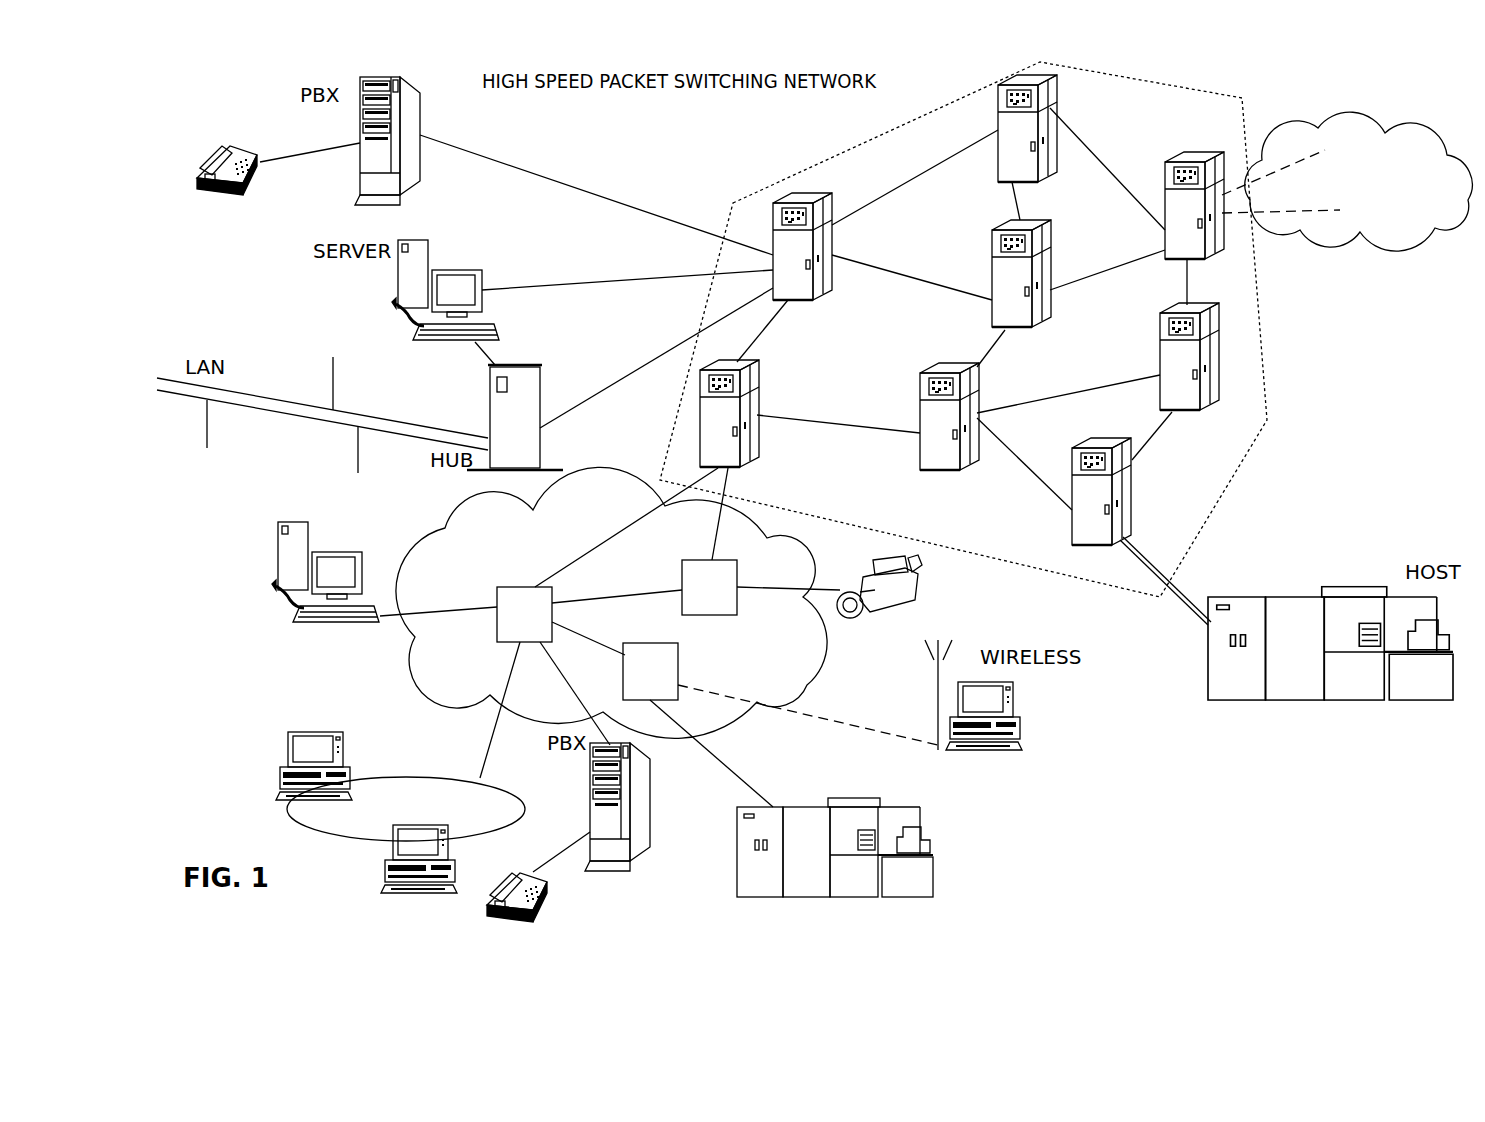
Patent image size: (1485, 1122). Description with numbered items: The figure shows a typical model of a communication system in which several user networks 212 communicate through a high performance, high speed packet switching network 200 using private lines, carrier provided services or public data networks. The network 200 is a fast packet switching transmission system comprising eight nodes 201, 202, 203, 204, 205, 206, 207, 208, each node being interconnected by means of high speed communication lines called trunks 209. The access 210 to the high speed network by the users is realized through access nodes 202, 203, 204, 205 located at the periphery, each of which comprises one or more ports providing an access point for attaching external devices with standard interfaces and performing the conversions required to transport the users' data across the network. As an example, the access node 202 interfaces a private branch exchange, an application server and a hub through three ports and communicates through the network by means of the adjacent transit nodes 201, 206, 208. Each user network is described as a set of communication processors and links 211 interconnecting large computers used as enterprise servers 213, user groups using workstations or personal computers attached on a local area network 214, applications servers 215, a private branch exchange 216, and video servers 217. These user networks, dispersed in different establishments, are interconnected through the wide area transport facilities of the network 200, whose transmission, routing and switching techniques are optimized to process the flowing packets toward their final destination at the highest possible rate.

The high performance network 200 is at (808, 167).
The transit node 201 is at (1052, 78).
The access node 202 is at (828, 197).
The access node 203 is at (1113, 438).
The access node 204 is at (1220, 150).
The access node 205 is at (758, 383).
The transit node 206 is at (950, 362).
The node 207 is at (1208, 303).
The transit node 208 is at (1038, 223).
The trunk 209 is at (1122, 267).
The access 210 is at (633, 204).
The communication processors and links 211 is at (443, 540).
The user network 212 is at (1354, 121).
The enterprise server 213 is at (922, 827).
The local area network 214 is at (383, 777).
The applications server 215 is at (302, 523).
The private branch exchange 216 is at (600, 870).
The video server 217 is at (880, 565).